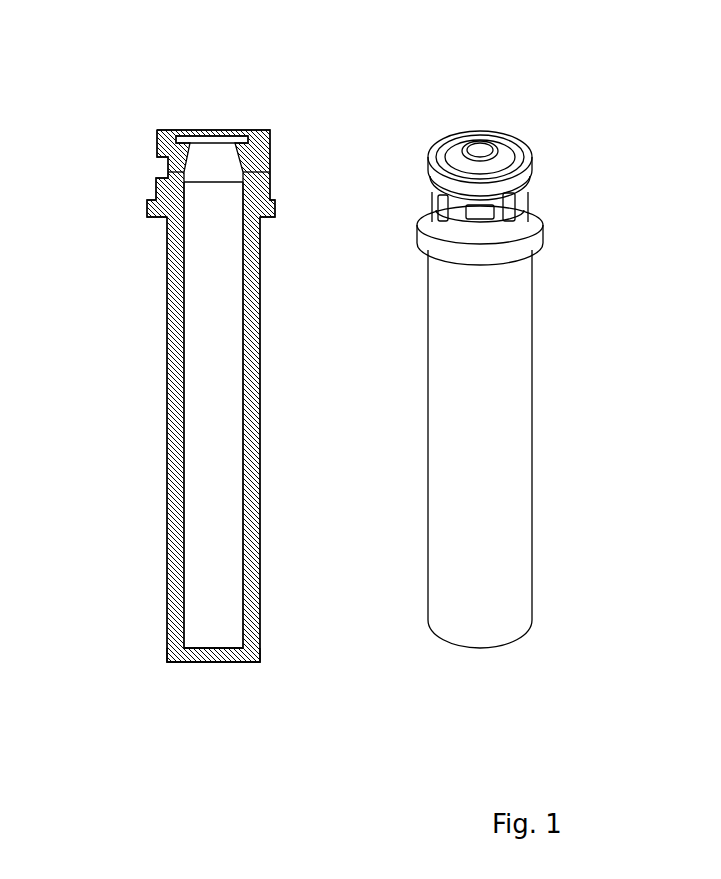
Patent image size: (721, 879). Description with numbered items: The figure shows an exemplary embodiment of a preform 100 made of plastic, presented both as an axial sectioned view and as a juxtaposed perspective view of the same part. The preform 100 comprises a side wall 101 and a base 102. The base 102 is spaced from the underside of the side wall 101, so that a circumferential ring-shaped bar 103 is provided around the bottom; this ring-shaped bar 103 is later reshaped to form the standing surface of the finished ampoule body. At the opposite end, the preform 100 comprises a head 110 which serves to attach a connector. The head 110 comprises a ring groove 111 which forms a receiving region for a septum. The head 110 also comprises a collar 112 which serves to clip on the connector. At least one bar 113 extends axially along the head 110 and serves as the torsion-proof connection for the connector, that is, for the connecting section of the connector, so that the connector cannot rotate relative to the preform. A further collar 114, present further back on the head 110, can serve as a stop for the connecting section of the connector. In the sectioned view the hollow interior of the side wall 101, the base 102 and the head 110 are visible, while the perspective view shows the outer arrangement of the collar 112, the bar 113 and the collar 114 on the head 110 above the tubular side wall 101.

The preform 100 is at (225, 416).
The side wall 101 is at (167, 427).
The base 102 is at (212, 655).
The ring-shaped bar 103 is at (260, 658).
The head 110 is at (265, 160).
The ring groove 111 is at (187, 133).
The collar 112 is at (536, 178).
The bar 113 is at (420, 222).
The collar 114 is at (157, 218).